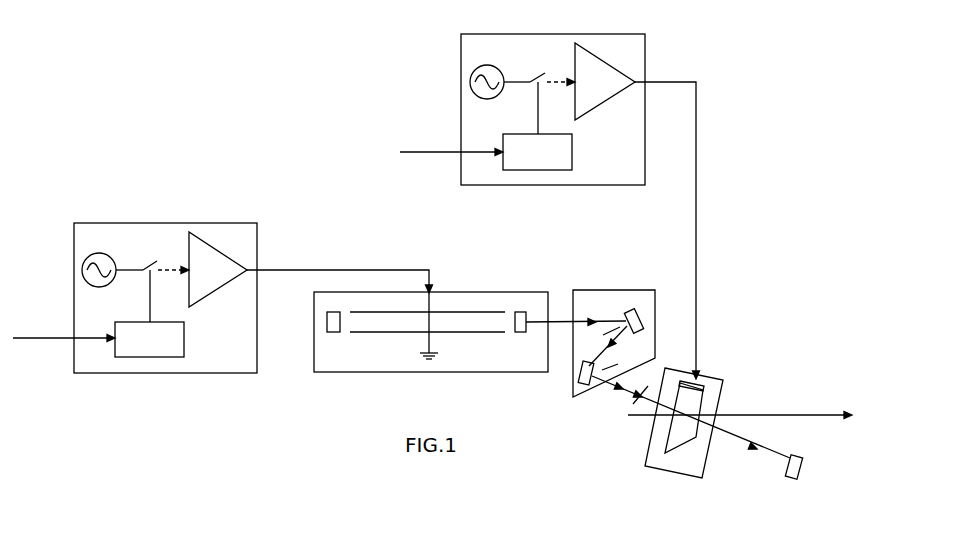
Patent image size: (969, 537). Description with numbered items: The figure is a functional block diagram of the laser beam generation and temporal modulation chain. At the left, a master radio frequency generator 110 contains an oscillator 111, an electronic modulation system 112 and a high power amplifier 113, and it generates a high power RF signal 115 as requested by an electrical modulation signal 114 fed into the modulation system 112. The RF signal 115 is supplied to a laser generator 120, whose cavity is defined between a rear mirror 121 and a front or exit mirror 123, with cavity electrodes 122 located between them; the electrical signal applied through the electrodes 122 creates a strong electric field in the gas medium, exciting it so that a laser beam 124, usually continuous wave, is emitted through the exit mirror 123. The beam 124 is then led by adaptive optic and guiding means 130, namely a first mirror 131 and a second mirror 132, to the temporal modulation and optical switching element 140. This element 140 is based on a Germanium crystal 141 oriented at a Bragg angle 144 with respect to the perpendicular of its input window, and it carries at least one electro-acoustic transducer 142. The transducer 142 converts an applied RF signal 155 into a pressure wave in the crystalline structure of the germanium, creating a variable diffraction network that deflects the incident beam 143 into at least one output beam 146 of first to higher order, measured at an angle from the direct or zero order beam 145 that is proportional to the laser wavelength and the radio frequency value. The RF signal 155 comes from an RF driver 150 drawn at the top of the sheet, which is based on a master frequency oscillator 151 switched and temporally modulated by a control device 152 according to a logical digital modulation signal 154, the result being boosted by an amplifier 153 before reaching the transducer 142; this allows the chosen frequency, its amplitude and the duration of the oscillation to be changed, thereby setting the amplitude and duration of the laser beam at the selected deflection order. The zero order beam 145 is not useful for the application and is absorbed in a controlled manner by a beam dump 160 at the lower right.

The master radio frequency generator 110 is at (165, 291).
The oscillator 111 is at (99, 263).
The electronic modulation system 112 is at (149, 309).
The high power amplifier 113 is at (202, 269).
The electrical modulation signal 114 is at (64, 332).
The high power RF signal 115 is at (340, 284).
The laser generator 120 is at (431, 324).
The rear mirror 121 is at (337, 332).
The cavity electrodes 122 is at (427, 335).
The front or exit mirror 123 is at (521, 332).
The laser beam 124 is at (576, 319).
The adaptive optic and guiding means 130 is at (614, 334).
The mirror 131 is at (625, 314).
The mirror 132 is at (602, 355).
The temporal modulation and optical switching element 140 is at (684, 415).
The Germanium crystal 141 is at (684, 418).
The electro-acoustic transducer 142 is at (706, 378).
The incident beam 143 is at (641, 396).
The Bragg angle 144 is at (632, 405).
The direct beam (zero order) 145 is at (740, 437).
The output beam 146 is at (740, 410).
The RF driver 150 is at (553, 102).
The master frequency oscillator 151 is at (487, 75).
The control device 152 is at (537, 121).
The amplifier 153 is at (591, 81).
The logical digital modulation signal 154 is at (451, 147).
The RF signal 155 is at (667, 223).
The beam dump 160 is at (799, 461).